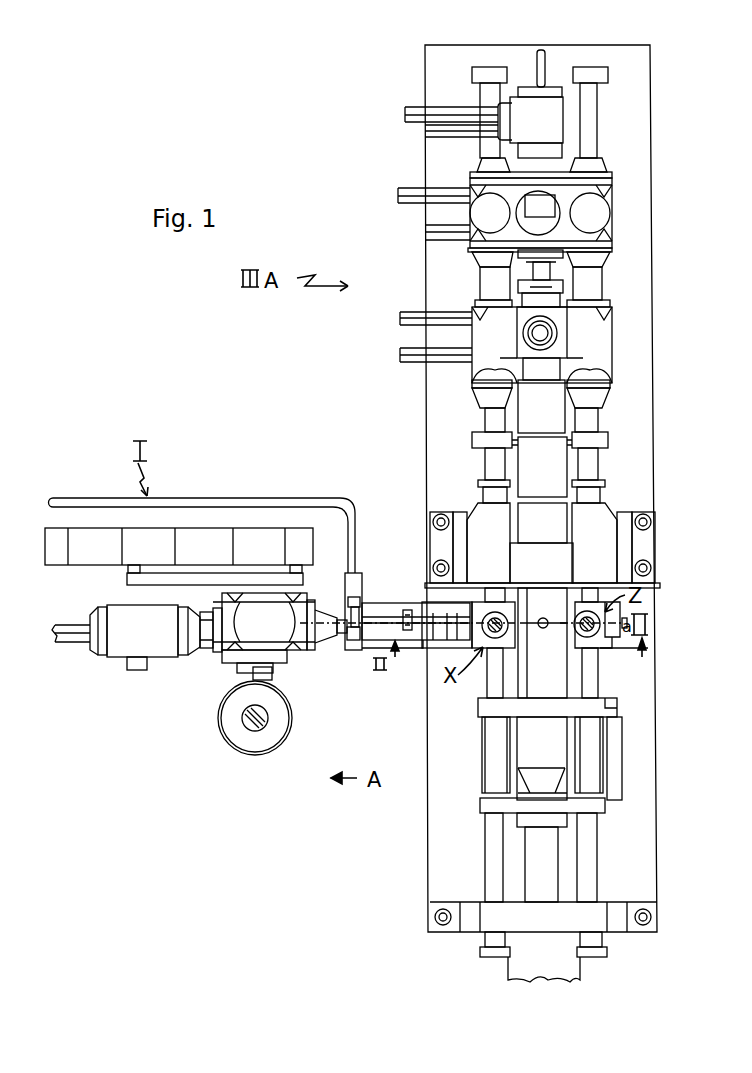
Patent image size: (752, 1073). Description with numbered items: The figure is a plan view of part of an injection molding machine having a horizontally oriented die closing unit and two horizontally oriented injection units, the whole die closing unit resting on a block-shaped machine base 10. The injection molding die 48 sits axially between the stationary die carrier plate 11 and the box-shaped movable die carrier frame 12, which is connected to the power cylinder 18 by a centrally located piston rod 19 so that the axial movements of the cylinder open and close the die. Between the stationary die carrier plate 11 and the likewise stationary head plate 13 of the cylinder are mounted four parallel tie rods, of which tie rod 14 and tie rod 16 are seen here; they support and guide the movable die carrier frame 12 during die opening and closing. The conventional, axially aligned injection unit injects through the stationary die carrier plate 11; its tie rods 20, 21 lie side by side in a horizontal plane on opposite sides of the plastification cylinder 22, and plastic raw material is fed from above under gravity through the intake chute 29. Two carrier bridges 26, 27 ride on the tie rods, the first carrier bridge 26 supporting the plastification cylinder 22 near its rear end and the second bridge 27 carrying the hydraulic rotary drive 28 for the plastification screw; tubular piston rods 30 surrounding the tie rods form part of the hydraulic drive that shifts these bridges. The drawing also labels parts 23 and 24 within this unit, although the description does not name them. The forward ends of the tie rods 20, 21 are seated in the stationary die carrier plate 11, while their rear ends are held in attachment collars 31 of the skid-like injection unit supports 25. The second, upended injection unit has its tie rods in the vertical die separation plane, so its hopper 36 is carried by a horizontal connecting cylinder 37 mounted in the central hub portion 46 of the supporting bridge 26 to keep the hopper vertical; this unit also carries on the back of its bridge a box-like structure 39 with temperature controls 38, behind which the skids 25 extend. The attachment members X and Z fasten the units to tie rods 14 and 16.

The machine base 10 is at (425, 382).
The stationary die carrier plate 11 is at (430, 538).
The movable die carrier frame 12 is at (493, 707).
The head plate 13 is at (500, 920).
The tie rod 14 is at (490, 677).
The tie rod 16 is at (592, 687).
The power cylinder 18 is at (540, 965).
The piston rod 19 is at (540, 867).
The tie rod 20 is at (485, 465).
The tie rod 21 is at (590, 458).
The plastification cylinder 22 is at (530, 497).
The block 23 is at (540, 470).
The plate 24 is at (485, 440).
The injection unit support 25 is at (245, 502).
The carrier bridge 26 is at (500, 328).
The carrier bridge 27 is at (487, 215).
The hydraulic rotary drive 28 is at (547, 127).
The intake chute 29 is at (543, 337).
The tubular piston rod 30 is at (497, 290).
The attachment collar 31 is at (487, 75).
The hopper 36 is at (257, 747).
The connecting cylinder 37 is at (227, 677).
The temperature controls 38 is at (193, 545).
The box-like structure 39 is at (160, 577).
The central hub portion 46 is at (552, 323).
The injection molding die 48 is at (545, 608).